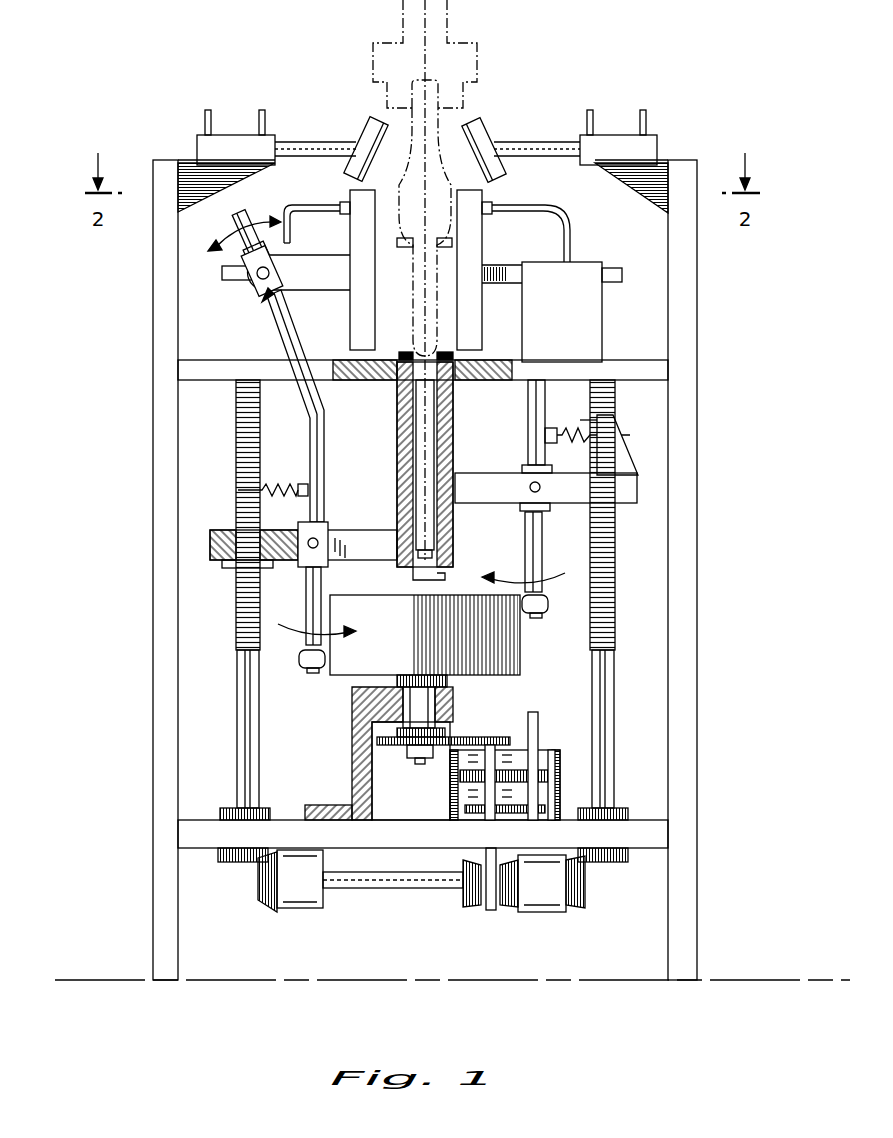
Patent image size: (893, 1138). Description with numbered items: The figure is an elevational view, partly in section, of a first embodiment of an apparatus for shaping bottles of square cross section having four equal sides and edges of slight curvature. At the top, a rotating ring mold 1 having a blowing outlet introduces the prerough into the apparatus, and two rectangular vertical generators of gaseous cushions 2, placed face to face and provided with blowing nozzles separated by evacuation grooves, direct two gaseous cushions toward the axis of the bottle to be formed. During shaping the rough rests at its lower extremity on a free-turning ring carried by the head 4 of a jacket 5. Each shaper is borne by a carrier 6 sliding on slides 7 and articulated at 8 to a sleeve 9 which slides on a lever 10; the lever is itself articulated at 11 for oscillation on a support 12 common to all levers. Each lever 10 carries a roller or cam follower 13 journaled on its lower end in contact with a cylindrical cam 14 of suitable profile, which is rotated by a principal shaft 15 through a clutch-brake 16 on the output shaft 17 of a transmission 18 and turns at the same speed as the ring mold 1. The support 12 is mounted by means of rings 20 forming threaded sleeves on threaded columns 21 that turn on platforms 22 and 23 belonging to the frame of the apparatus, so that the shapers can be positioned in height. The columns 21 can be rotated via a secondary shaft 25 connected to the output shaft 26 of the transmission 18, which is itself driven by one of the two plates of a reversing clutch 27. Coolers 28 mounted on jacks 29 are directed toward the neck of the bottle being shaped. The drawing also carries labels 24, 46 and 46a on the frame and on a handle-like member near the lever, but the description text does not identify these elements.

The rotating ring mold 1 is at (372, 66).
The generators of gaseous cushions 2 is at (362, 268).
The head 4 is at (424, 236).
The jacket 5 is at (417, 405).
The carrier 6 is at (306, 256).
The slides 7 is at (593, 322).
The articulation 8 is at (249, 278).
The sleeve 9 is at (265, 298).
The lever 10 is at (298, 393).
The articulation 11 is at (318, 540).
The support 12 is at (378, 535).
The roller or cam follower 13 is at (300, 660).
The cylindrical cam 14 is at (503, 652).
The principal shaft 15 is at (537, 728).
The clutch-brake 16 is at (463, 760).
The output shaft 17 is at (500, 733).
The transmission 18 is at (557, 752).
The rings 20 is at (233, 569).
The threaded columns 21 is at (238, 650).
The platform 22 is at (200, 836).
The platform 23 is at (203, 370).
The frame 24 is at (153, 515).
The secondary shaft 25 is at (370, 888).
The output shaft 26 is at (488, 892).
The reversing clutch 27 is at (462, 788).
The coolers 28 is at (486, 133).
The jacks 29 is at (652, 147).
The handle 46 is at (278, 330).
The tilting plate 46a is at (360, 122).